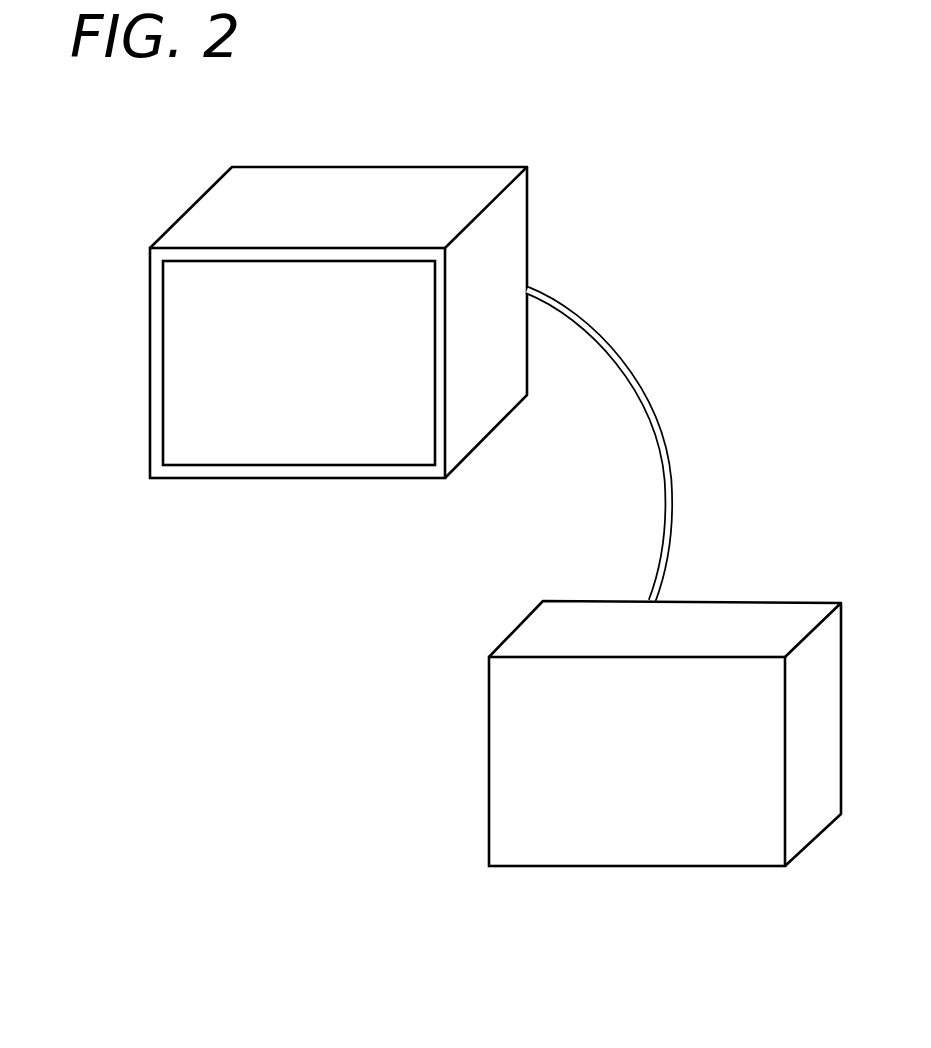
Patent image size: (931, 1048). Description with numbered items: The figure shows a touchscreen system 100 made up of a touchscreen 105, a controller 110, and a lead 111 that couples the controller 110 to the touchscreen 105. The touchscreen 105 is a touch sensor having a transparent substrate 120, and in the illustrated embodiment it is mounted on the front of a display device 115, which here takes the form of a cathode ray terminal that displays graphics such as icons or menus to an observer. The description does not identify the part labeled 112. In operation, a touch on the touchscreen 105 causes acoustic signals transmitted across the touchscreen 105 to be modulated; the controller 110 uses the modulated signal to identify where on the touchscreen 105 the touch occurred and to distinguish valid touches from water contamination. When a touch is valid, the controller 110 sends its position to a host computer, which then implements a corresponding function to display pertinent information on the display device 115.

The touchscreen system 100 is at (66, 174).
The touchscreen 105 is at (160, 407).
The controller 110 is at (781, 599).
The lead 111 is at (667, 437).
The side wall of housing 112 is at (528, 227).
The display device 115 is at (227, 478).
The substrate 120 is at (357, 447).